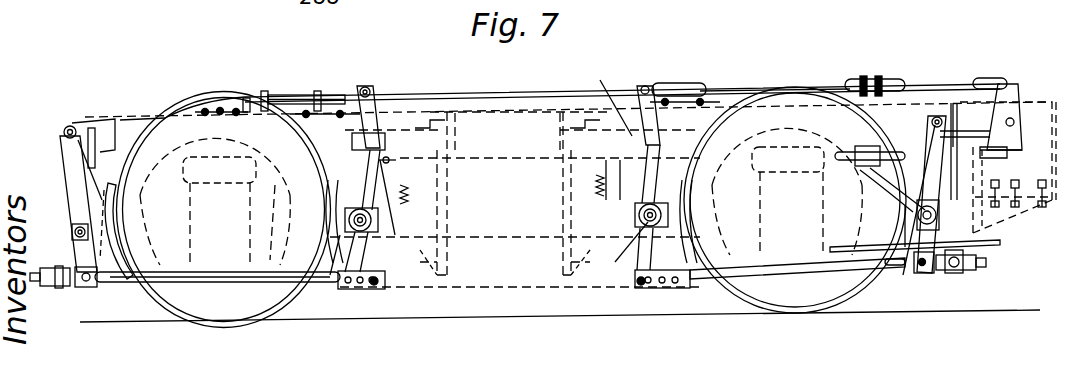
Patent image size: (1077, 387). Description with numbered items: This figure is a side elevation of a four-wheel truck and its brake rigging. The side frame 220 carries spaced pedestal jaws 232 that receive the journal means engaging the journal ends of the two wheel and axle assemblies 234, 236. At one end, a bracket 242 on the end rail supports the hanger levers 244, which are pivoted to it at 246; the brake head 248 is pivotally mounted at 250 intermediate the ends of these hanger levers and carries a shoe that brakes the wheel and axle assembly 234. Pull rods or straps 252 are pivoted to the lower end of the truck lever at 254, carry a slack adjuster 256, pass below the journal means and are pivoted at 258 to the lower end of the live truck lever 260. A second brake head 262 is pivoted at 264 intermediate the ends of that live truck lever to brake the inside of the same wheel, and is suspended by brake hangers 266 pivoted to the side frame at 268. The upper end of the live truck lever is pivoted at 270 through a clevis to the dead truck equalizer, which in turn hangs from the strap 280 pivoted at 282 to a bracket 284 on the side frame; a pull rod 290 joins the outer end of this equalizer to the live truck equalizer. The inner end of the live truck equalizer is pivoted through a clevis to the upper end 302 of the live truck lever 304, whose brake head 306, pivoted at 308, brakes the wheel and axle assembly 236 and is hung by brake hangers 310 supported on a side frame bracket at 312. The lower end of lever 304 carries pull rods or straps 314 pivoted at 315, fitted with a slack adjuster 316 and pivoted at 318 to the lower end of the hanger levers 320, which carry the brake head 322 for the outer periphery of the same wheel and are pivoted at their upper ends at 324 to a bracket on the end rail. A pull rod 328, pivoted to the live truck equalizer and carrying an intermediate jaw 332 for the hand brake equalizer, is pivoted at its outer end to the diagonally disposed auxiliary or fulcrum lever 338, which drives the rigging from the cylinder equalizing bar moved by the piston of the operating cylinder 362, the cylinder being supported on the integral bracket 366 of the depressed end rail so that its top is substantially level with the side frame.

The side frame 220 is at (509, 112).
The pedestal jaws 232 is at (180, 278).
The wheel and axle assembly 234 is at (280, 302).
The wheel and axle assembly 236 is at (756, 296).
The bracket 242 is at (82, 121).
The hanger levers 244 is at (60, 162).
The pivot 246 is at (67, 126).
The brake head 248 is at (100, 196).
The pivot 250 is at (72, 232).
The pull rods or straps 252 is at (233, 279).
The pivot 254 is at (90, 288).
The slack adjuster 256 is at (58, 288).
The pivot 258 is at (383, 291).
The live truck lever 260 is at (372, 138).
The brake head 262 is at (371, 288).
The pivot 264 is at (395, 235).
The brake hangers 266 is at (390, 162).
The pivot 268 is at (374, 190).
The pivot 270 is at (367, 87).
The strap 280 is at (300, 95).
The pivot 282 is at (265, 92).
The bracket 284 is at (235, 97).
The pull rod 290 is at (637, 88).
The upper end of live truck lever 302 is at (653, 87).
The live truck lever 304 is at (612, 100).
The brake head 306 is at (661, 282).
The pivot 308 is at (615, 262).
The brake hangers 310 is at (566, 164).
The pivot 312 is at (577, 138).
The pull rods or straps 314 is at (800, 268).
The pivot 315 is at (633, 290).
The slack adjuster 316 is at (972, 267).
The pivot 318 is at (930, 273).
The hanger levers 320 is at (962, 245).
The brake head 322 is at (903, 275).
The pivot 324 is at (938, 117).
The pull rod 328 is at (772, 90).
The intermediate jaw 332 is at (890, 80).
The auxiliary or fulcrum lever 338 is at (1010, 84).
The operating cylinder 362 is at (1008, 167).
The integral bracket 366 is at (1012, 225).